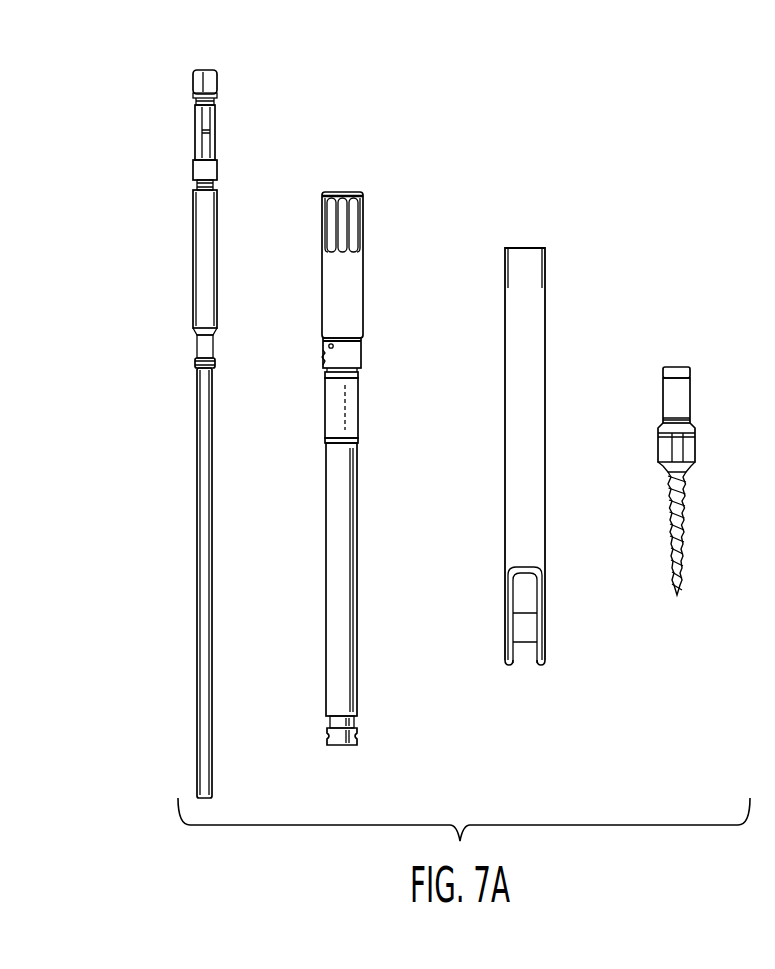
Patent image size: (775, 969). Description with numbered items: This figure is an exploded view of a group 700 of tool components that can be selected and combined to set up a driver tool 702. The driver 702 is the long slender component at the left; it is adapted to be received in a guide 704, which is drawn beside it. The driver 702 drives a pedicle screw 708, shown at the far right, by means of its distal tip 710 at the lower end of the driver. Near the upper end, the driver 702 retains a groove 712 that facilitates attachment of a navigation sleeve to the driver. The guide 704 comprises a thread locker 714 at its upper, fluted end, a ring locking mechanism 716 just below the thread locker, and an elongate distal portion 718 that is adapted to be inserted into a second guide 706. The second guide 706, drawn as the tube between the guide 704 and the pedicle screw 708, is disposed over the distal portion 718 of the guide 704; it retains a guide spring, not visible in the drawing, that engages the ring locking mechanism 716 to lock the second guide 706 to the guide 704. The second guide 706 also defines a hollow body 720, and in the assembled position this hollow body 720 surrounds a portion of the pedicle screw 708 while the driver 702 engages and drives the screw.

The group of tool components 700 is at (164, 90).
The driver tool 702 is at (269, 435).
The guide 704 is at (378, 438).
The second guide 706 is at (558, 425).
The pedicle screw 708 is at (675, 364).
The distal tip 710 is at (200, 800).
The groove 712 is at (215, 190).
The thread locker 714 is at (345, 295).
The ring locking mechanism 716 is at (348, 357).
The distal portion 718 is at (357, 530).
The hollow body 720 is at (530, 455).